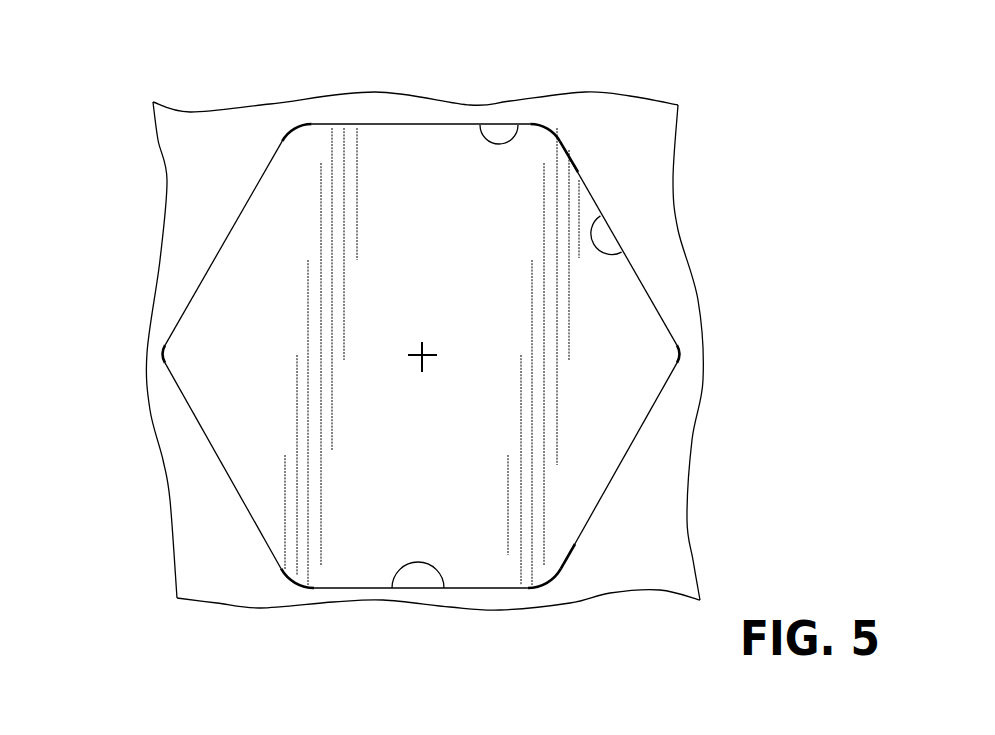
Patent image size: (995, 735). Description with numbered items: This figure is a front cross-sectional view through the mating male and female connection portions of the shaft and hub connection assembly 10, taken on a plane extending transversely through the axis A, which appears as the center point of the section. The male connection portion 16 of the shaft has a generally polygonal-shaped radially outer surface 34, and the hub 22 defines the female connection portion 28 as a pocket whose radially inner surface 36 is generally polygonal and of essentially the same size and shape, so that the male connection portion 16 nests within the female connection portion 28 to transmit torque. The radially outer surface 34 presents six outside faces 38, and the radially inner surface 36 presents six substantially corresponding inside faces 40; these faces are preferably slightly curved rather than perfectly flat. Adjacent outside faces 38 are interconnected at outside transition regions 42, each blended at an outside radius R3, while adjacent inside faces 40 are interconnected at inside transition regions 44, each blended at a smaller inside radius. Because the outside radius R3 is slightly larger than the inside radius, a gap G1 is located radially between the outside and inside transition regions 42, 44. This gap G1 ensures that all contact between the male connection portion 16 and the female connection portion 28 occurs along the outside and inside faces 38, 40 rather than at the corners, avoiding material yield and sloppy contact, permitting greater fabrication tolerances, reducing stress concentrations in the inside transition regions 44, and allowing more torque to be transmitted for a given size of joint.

The shaft and hub connection assembly 10 is at (784, 117).
The male connection portion 16 is at (662, 312).
The hub 22 is at (224, 440).
The female connection portion 28 is at (412, 340).
The radially outer surface 34 is at (643, 431).
The radially inner surface 36 is at (393, 573).
The outside faces 38 is at (376, 126).
The inside faces 40 is at (515, 128).
The outside transition regions 42 is at (552, 128).
The inside transition regions 44 is at (165, 360).
The gap G1 is at (163, 360).
The outside radius R3 is at (299, 122).
The axis A is at (422, 355).